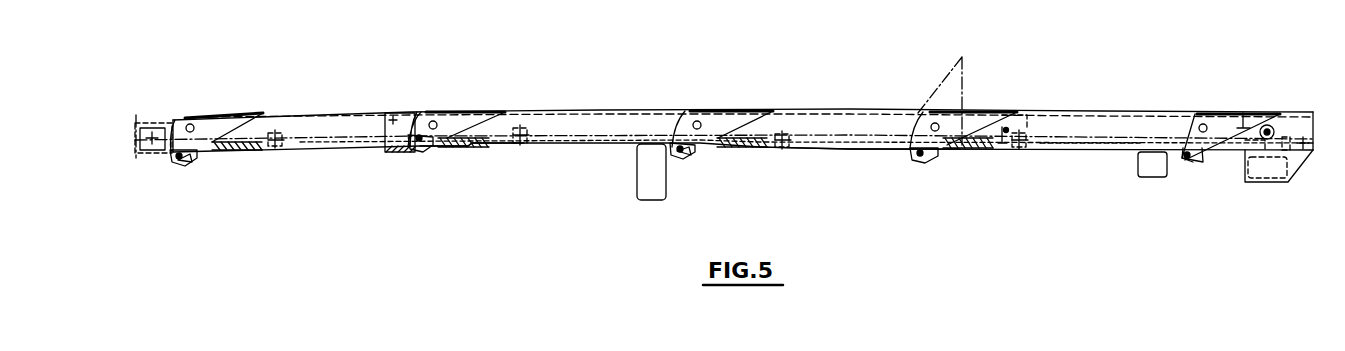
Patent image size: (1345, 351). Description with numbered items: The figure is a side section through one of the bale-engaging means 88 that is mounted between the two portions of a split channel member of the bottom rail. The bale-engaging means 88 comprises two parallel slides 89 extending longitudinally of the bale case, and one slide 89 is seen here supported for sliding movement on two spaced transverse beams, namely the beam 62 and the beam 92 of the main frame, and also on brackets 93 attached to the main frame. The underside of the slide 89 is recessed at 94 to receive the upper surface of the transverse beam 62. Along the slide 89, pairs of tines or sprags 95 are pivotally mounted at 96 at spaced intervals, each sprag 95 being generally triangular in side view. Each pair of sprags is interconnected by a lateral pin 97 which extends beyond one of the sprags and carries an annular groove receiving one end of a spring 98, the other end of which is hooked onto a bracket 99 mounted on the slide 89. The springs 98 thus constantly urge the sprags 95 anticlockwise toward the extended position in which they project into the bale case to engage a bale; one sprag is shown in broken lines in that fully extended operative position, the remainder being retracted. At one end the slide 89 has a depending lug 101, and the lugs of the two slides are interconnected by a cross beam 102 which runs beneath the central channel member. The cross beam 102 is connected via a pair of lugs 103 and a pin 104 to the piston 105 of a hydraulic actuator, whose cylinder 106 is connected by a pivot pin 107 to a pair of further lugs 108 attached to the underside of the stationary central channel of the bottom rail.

The transverse beam 62 is at (667, 177).
The bale-engaging means 88 is at (825, 105).
The slide 89 is at (860, 150).
The beam 92 is at (1137, 176).
The bracket 93 is at (402, 153).
The recess 94 is at (473, 146).
The sprag 95 is at (217, 113).
The pivot 96 is at (190, 123).
The lateral pin 97 is at (174, 160).
The spring 98 is at (213, 152).
The bracket 99 is at (287, 145).
The depending lug 101 is at (1303, 172).
The cross beam 102 is at (1267, 172).
The lug 103 is at (1304, 101).
The pin 104 is at (1284, 85).
The piston 105 is at (1236, 90).
The cylinder 106 is at (1098, 144).
The pivot pin 107 is at (999, 185).
The further lug 108 is at (951, 132).